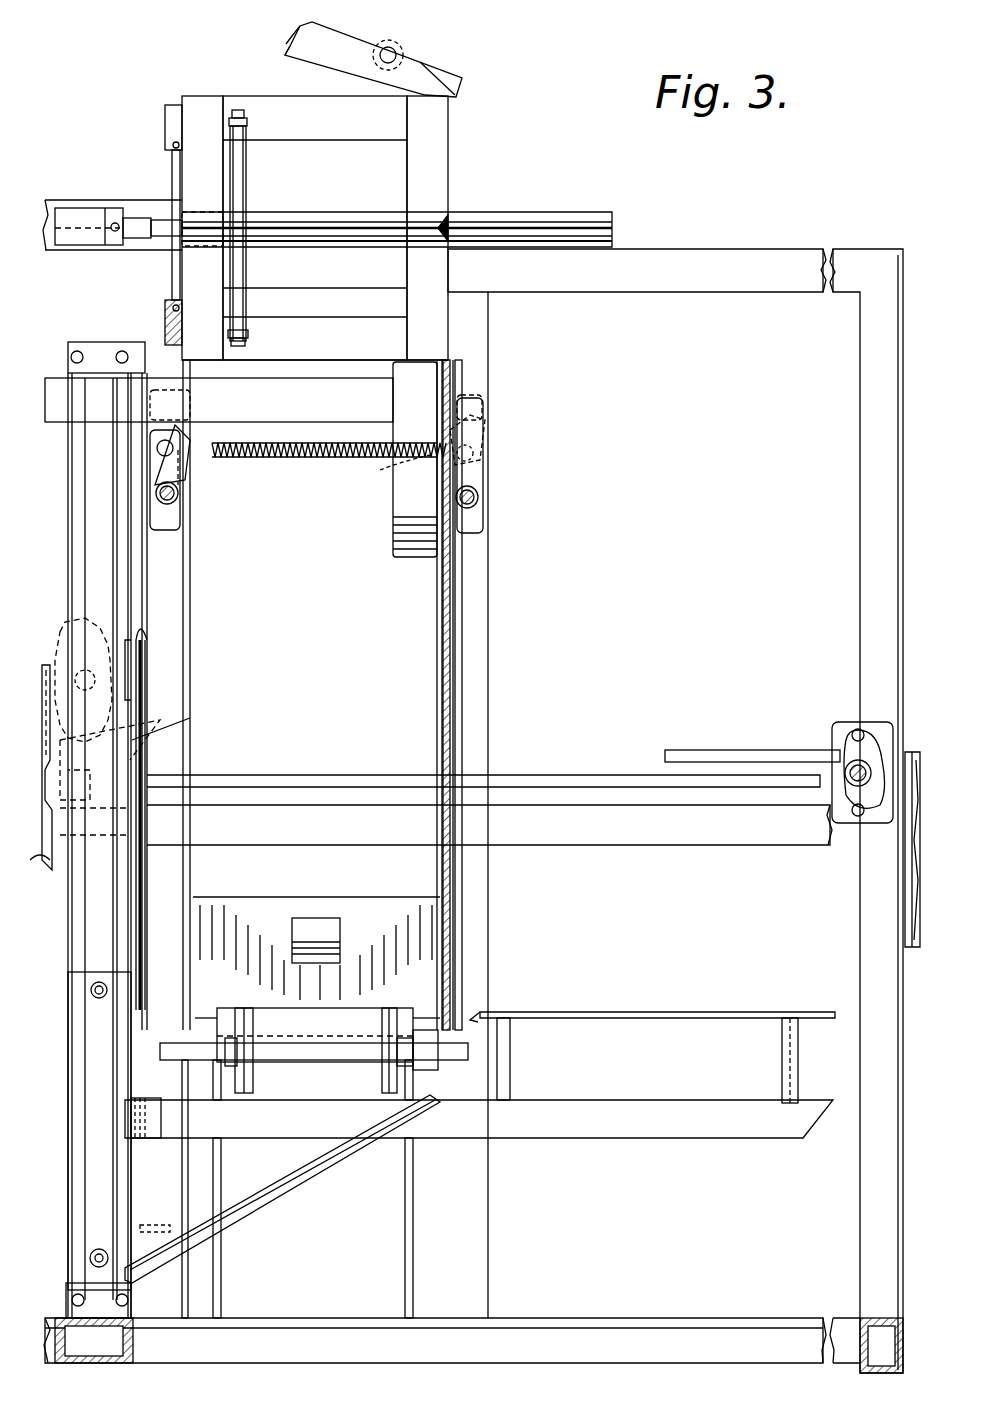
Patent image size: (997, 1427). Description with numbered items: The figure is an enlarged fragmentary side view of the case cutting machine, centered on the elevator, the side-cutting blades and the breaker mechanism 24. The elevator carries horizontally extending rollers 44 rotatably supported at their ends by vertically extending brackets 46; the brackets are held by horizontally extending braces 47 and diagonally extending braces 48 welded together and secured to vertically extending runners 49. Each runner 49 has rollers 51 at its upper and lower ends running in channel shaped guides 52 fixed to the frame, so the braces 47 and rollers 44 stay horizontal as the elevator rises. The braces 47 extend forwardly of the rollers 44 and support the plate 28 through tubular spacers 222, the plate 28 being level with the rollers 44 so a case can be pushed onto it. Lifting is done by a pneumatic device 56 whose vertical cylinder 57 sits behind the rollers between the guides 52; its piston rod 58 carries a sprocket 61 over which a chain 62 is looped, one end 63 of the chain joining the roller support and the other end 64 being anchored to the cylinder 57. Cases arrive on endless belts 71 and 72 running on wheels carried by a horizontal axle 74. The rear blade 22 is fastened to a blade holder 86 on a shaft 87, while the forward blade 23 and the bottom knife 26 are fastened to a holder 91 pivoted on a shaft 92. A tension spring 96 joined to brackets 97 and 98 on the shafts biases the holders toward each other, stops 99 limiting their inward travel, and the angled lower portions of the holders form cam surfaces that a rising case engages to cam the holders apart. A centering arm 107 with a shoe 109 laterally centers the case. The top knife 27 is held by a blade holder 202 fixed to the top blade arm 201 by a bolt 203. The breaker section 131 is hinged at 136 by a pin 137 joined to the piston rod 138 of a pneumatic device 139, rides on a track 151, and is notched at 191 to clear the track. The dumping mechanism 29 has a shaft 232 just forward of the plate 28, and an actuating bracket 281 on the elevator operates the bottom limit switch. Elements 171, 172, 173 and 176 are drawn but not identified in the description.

The rear blade 22 is at (445, 440).
The forward blade 23 is at (415, 459).
The breaker mechanism 24 is at (182, 88).
The bottom knife 26 is at (468, 445).
The top knife 27 is at (455, 96).
The plate 28 is at (598, 1012).
The dumping mechanism 29 is at (738, 748).
The rollers 44 is at (270, 1010).
The brackets 46 is at (210, 1100).
The horizontally extending braces 47 is at (510, 1125).
The diagonally extending braces 48 is at (248, 1185).
The runners 49 is at (110, 1180).
The rollers 51 is at (68, 1006).
The channel shaped guides 52 is at (120, 612).
The pneumatic device 56 is at (128, 930).
The cylinder 57 is at (140, 820).
The piston rod 58 is at (150, 760).
The sprocket 61 is at (148, 720).
The chain 62 is at (158, 736).
The chain end 63 is at (145, 1090).
The chain end 64 is at (47, 771).
The endless belt 71 is at (248, 1094).
The endless belt 72 is at (382, 1088).
The horizontal axle 74 is at (253, 1062).
The blade holder 86 is at (185, 480).
The shaft 87 is at (170, 505).
The blade holder 91 is at (483, 435).
The shaft 92 is at (478, 497).
The tension spring 96 is at (318, 455).
The bracket 97 is at (185, 462).
The bracket 98 is at (390, 473).
The stops 99 is at (175, 405).
The centering arm 107 is at (348, 378).
The shoe 109 is at (395, 540).
The section 131 is at (383, 130).
The hinge 136 is at (165, 122).
The pin 137 is at (172, 160).
The piston rod 138 is at (150, 220).
The pneumatic device 139 is at (90, 250).
The track 151 is at (595, 212).
The slide 171 is at (213, 240).
The extension arm 172 is at (48, 205).
The nut 173 is at (246, 118).
The adjusting rod 176 is at (246, 128).
The notch 191 is at (450, 226).
The top blade arm 201 is at (292, 52).
The blade holder 202 is at (445, 75).
The bolt 203 is at (396, 52).
The tubular spacers 222 is at (510, 1063).
The shaft 232 is at (850, 778).
The actuating bracket 281 is at (332, 932).